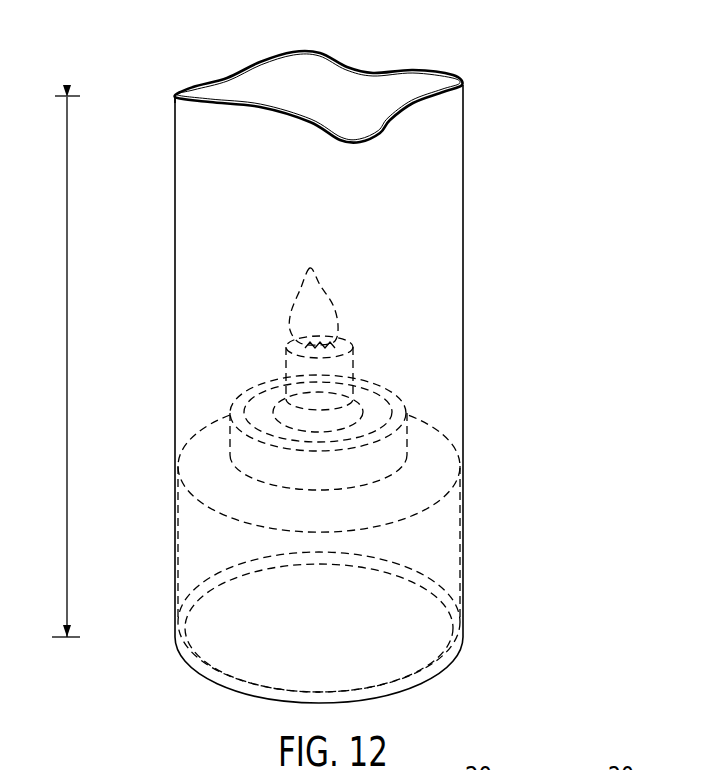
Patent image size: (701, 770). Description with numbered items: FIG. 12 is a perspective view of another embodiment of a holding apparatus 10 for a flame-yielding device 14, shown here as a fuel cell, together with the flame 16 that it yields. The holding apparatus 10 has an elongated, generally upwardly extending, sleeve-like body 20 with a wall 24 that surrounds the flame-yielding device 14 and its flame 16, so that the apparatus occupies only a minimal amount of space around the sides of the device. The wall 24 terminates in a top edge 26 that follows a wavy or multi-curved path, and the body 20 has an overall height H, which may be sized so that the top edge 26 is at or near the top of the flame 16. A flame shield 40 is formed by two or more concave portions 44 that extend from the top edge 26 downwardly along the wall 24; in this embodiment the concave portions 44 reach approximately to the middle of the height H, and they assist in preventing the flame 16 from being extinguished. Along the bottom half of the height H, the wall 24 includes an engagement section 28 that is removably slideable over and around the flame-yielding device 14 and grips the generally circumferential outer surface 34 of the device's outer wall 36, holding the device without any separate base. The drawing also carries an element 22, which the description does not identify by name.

The holding apparatus 10 is at (332, 359).
The flame-yielding device 14 is at (357, 514).
The flame 16 is at (305, 300).
The sleeve-like body 20 is at (302, 394).
The lower portion of sleeve 22 is at (142, 548).
The wall 24 is at (175, 230).
The top edge 26 is at (177, 92).
The engagement section 28 is at (165, 522).
The outer surface 34 is at (467, 490).
The outer wall 36 is at (447, 571).
The flame shield 40 is at (393, 83).
The concave portions 44 is at (230, 73).
The height H is at (67, 358).